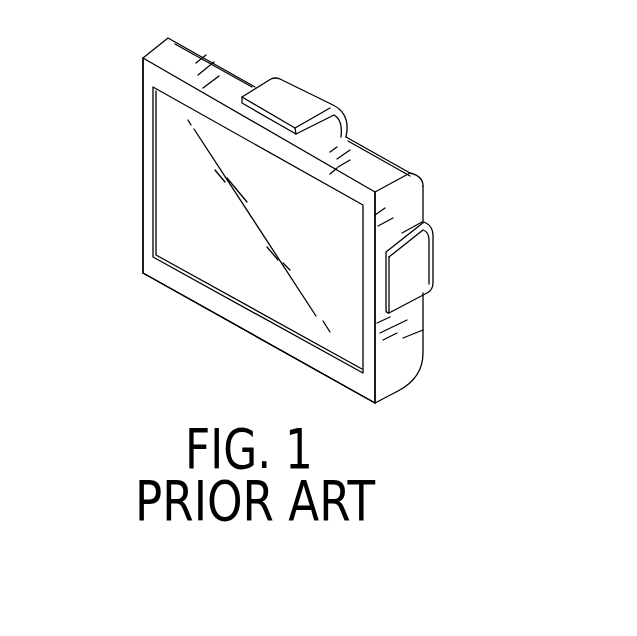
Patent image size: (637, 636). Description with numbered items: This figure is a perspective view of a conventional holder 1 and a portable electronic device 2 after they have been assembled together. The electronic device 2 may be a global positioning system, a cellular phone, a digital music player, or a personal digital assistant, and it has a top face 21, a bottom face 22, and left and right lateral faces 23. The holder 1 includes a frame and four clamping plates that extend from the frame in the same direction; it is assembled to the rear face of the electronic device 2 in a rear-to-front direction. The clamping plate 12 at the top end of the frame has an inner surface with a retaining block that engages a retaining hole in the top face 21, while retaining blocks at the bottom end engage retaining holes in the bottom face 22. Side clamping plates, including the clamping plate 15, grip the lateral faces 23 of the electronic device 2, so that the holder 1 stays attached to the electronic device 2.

The holder 1 is at (368, 108).
The portable electronic device 2 is at (118, 128).
The clamping plate 12 is at (292, 103).
The clamping plate 15 is at (411, 268).
The top face 21 is at (225, 83).
The bottom face 22 is at (242, 328).
The lateral faces 23 is at (141, 163).